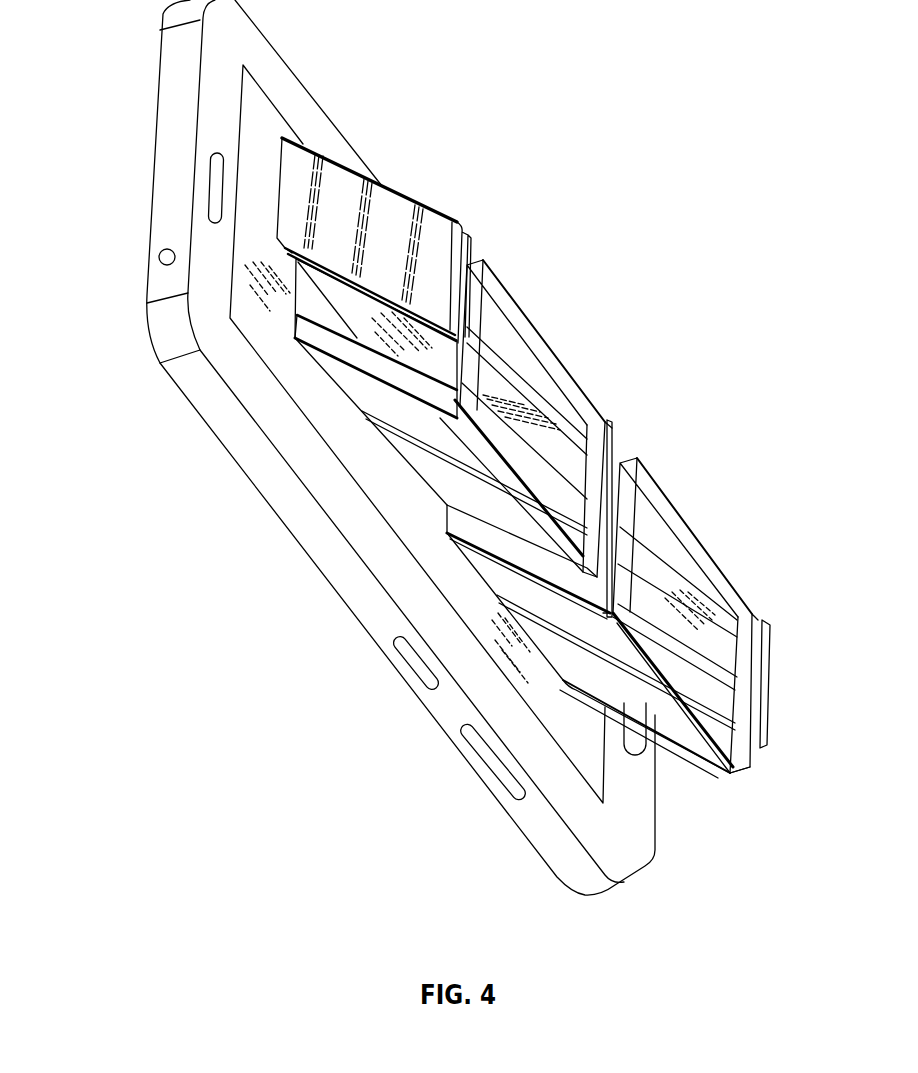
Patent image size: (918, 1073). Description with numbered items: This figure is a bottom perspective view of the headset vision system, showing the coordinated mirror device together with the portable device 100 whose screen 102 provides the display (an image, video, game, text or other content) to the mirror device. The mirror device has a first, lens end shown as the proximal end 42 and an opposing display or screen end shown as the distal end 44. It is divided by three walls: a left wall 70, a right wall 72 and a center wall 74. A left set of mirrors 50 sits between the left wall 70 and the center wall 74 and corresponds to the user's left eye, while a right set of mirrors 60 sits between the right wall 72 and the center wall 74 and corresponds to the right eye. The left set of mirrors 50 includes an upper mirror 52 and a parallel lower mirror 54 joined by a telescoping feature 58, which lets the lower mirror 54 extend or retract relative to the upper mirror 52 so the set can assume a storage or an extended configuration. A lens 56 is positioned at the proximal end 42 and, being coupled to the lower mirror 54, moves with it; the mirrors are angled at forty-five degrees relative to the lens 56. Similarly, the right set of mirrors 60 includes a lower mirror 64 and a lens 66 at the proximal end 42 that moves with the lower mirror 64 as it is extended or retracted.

The portable device 100 is at (128, 61).
The screen 102 is at (250, 112).
The left set of mirrors 50 is at (405, 137).
The left wall 70 is at (430, 224).
The upper mirror 52 is at (357, 310).
The lower mirror 54 is at (397, 457).
The lens 56 is at (508, 297).
The center wall 74 is at (612, 452).
The distal end 44 is at (274, 338).
The telescoping feature 58 is at (283, 292).
The right set of mirrors 60 is at (705, 490).
The lower mirror 64 is at (700, 747).
The lens 66 is at (755, 740).
The right wall 72 is at (767, 646).
The proximal end 42 is at (603, 630).